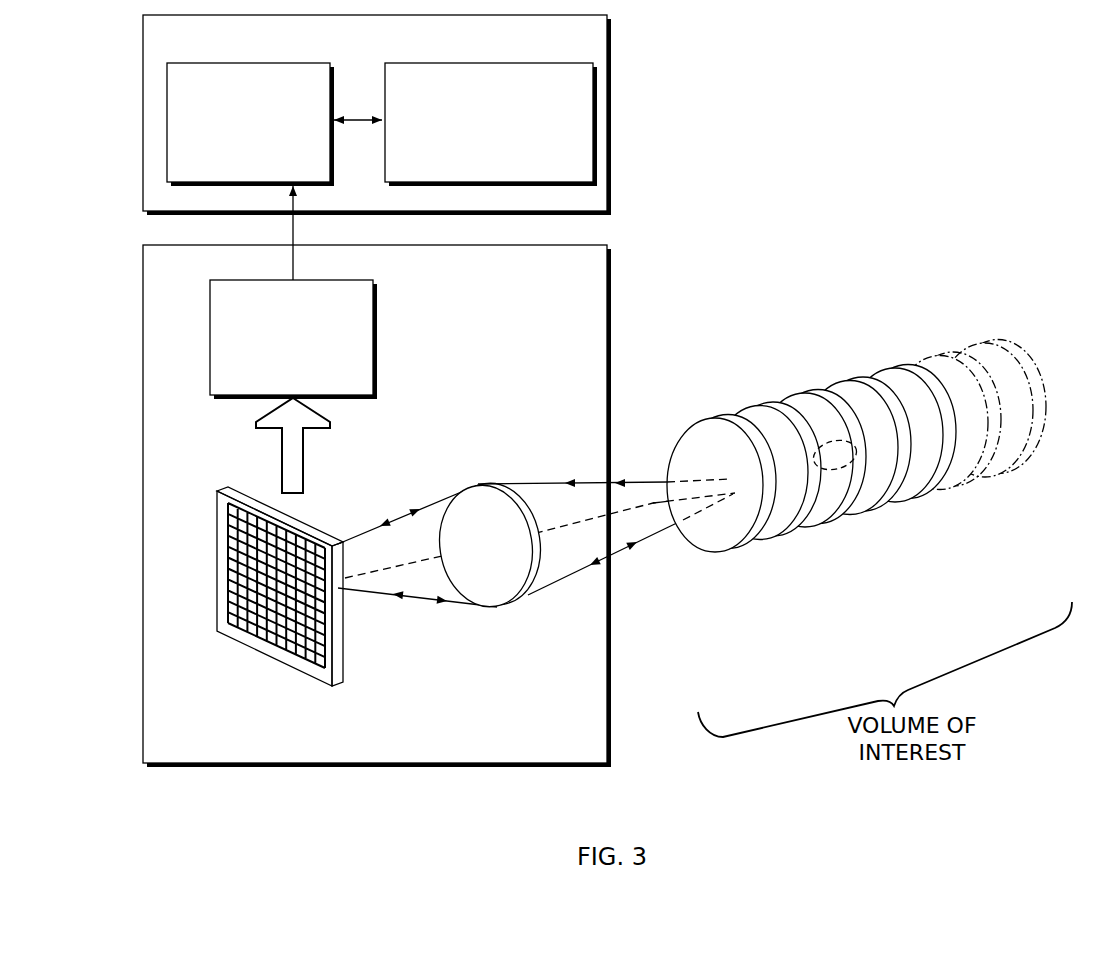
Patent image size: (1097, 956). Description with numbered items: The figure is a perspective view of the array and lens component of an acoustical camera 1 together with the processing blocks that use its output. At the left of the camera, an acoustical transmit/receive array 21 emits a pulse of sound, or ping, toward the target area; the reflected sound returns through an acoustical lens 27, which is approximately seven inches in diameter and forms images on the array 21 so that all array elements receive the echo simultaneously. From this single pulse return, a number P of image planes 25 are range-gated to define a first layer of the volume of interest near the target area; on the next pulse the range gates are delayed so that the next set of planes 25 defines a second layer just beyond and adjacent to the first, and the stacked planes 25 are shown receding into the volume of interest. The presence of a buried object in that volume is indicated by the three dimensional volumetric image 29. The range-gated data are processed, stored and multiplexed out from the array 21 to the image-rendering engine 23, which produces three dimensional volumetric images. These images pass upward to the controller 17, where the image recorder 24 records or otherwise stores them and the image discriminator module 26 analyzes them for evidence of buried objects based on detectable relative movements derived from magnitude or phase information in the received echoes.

The controller 17 is at (453, 47).
The image recorder 24 is at (234, 159).
The image discriminator module 26 is at (475, 159).
The image-rendering engine 23 is at (277, 387).
The acoustical camera 1 is at (582, 311).
The acoustical lens 27 is at (477, 486).
The acoustical transmit/receive array 21 is at (344, 664).
The three dimensional volumetric image 29 is at (827, 438).
The image planes 25 is at (849, 490).